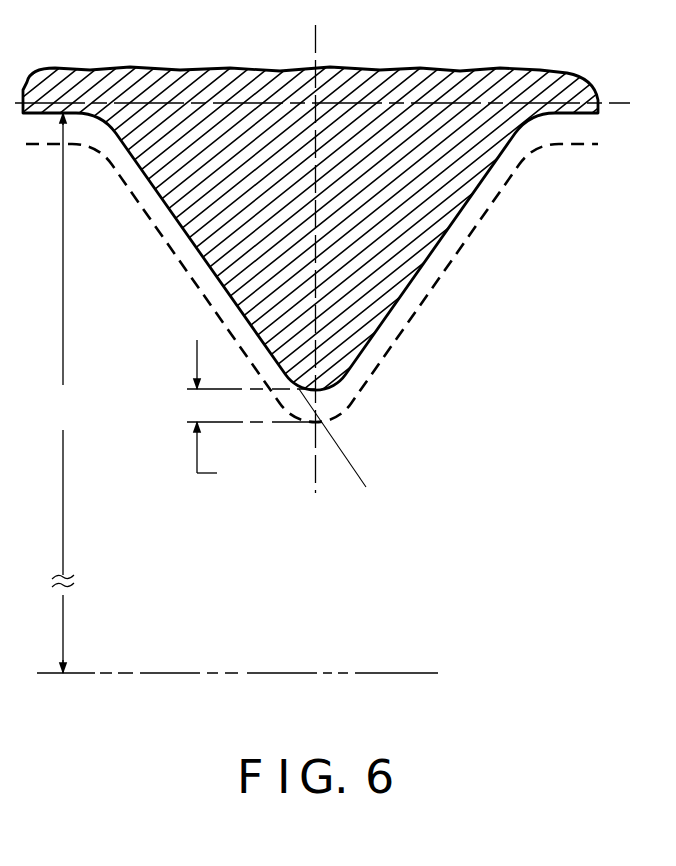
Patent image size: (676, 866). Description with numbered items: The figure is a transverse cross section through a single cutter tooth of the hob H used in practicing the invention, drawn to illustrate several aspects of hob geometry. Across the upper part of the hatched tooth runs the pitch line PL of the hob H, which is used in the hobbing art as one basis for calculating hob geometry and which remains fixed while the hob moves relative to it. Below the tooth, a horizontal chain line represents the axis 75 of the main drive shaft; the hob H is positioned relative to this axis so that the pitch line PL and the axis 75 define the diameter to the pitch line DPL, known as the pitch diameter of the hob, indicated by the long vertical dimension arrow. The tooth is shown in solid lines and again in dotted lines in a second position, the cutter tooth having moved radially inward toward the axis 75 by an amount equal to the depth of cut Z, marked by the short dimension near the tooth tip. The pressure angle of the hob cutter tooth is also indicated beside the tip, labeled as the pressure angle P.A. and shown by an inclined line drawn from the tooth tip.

The hob H is at (462, 175).
The pitch line PL is at (372, 103).
The diameter to the pitch line DPL is at (71, 393).
The depth of cut Z is at (216, 414).
The pressure angle line P.A. is at (366, 477).
The axis 75 is at (367, 645).